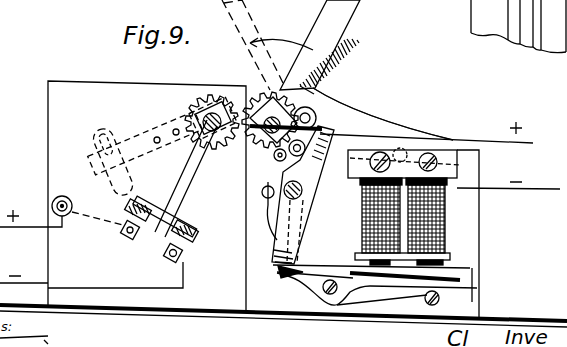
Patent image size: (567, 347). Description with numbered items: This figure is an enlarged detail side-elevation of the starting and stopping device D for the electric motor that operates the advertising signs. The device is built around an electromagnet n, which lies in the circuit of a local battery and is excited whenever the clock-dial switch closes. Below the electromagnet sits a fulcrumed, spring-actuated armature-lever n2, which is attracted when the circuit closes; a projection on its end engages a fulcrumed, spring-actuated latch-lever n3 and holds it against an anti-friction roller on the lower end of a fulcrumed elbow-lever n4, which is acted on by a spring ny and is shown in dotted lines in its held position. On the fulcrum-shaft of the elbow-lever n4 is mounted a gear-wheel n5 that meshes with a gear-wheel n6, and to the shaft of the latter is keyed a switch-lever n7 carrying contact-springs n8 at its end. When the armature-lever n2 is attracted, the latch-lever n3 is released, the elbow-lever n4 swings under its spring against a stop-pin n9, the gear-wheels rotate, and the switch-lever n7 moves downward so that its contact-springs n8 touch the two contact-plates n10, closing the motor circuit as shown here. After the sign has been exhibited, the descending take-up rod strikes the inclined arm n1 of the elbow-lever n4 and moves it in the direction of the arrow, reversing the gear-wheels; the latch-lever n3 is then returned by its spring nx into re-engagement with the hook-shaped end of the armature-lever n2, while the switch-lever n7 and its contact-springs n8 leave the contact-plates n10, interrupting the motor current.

The inclined arm n1 is at (337, 15).
The armature-lever n2 is at (467, 271).
The latch-lever n3 is at (290, 200).
The elbow-lever n4 is at (330, 95).
The gear-wheel n5 is at (310, 90).
The gear-wheel n6 is at (203, 92).
The switch-lever n7 is at (180, 200).
The contact-springs n8 is at (124, 210).
The stop-pin n9 is at (282, 157).
The contact-plates n10 is at (126, 238).
The spring nx is at (276, 213).
The spring ny is at (362, 124).
The electromagnet n is at (362, 226).
The starting and stopping device D is at (133, 112).